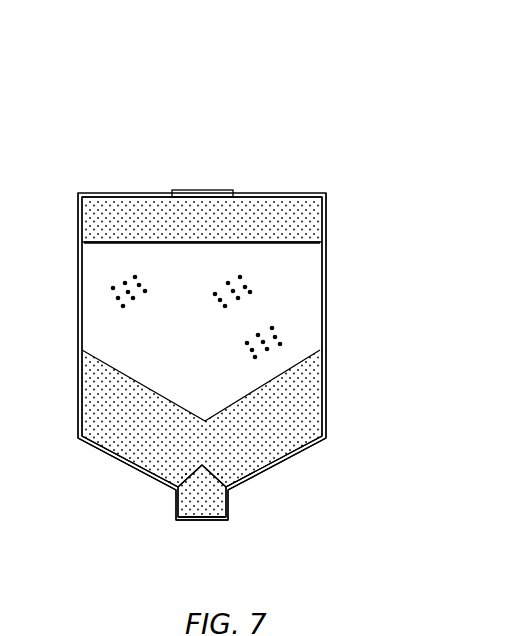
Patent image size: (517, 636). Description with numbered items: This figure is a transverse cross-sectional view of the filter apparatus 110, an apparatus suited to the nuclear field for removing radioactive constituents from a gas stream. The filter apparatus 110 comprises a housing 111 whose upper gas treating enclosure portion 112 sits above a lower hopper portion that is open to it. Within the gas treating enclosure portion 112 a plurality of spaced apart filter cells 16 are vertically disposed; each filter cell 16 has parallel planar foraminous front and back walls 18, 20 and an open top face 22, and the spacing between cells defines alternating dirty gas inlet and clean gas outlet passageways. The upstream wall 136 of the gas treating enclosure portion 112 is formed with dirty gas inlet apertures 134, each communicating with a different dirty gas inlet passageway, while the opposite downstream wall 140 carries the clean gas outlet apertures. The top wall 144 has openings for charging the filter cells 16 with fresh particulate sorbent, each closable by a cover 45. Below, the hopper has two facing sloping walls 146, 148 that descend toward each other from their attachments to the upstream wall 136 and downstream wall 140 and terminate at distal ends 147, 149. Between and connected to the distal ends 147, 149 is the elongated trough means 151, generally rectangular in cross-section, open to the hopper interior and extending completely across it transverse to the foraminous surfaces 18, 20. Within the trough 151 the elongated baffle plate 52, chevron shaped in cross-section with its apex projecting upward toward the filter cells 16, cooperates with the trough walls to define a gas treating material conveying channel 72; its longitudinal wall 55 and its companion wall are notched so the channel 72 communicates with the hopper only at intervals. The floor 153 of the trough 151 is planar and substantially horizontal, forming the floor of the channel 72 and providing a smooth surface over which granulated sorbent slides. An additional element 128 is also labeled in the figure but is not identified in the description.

The filter apparatus 110 is at (297, 82).
The housing 111 is at (340, 128).
The upper gas treating enclosure portion 112 is at (74, 279).
The upstream wall 136 is at (80, 218).
The dirty gas inlet aperture 134 is at (80, 331).
The top wall 144 is at (122, 196).
The cover 45 is at (197, 190).
The open top face 22 is at (240, 246).
The filter cell 16 is at (292, 262).
The front wall 18 is at (290, 303).
The back wall 20 is at (337, 298).
The downstream wall 140 is at (322, 336).
The inclined floor 128 is at (122, 378).
The sloping wall 146 is at (118, 462).
The sloping wall 148 is at (300, 450).
The distal end 147 is at (176, 497).
The distal end 149 is at (228, 497).
The gas treating material conveying channel 72 is at (216, 510).
The floor 153 is at (202, 520).
The elongated trough means 151 is at (176, 531).
The elongated baffle plate 52 is at (190, 480).
The longitudinal wall 55 is at (218, 480).